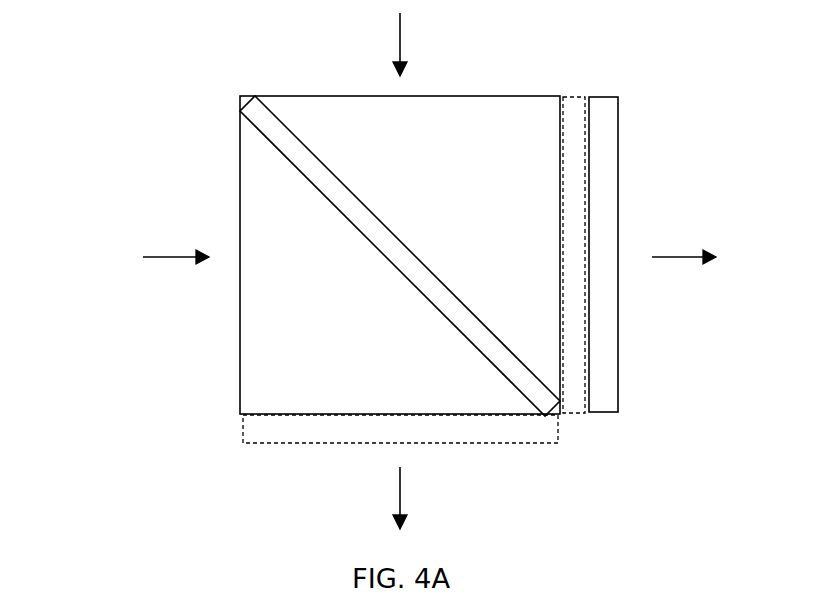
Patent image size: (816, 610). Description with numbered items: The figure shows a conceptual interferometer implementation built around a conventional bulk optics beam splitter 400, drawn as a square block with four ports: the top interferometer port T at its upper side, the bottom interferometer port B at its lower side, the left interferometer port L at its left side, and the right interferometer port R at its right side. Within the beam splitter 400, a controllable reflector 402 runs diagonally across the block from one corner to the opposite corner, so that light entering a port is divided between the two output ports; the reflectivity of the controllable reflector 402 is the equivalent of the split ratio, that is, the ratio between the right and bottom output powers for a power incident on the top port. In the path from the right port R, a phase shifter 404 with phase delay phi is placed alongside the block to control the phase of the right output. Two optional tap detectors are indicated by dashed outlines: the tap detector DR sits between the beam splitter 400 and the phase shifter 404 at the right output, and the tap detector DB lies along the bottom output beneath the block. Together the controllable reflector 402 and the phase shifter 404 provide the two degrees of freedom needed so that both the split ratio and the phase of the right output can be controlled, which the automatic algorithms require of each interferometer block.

The bulk optics beam splitter 400 is at (195, 88).
The controllable reflector 402 is at (265, 130).
The phase shifter 404 is at (608, 380).
The tap detector DR is at (573, 105).
The tap detector DB is at (475, 430).
The top interferometer port T is at (398, 42).
The left interferometer port L is at (168, 256).
The right interferometer port R is at (684, 256).
The bottom interferometer port B is at (398, 501).